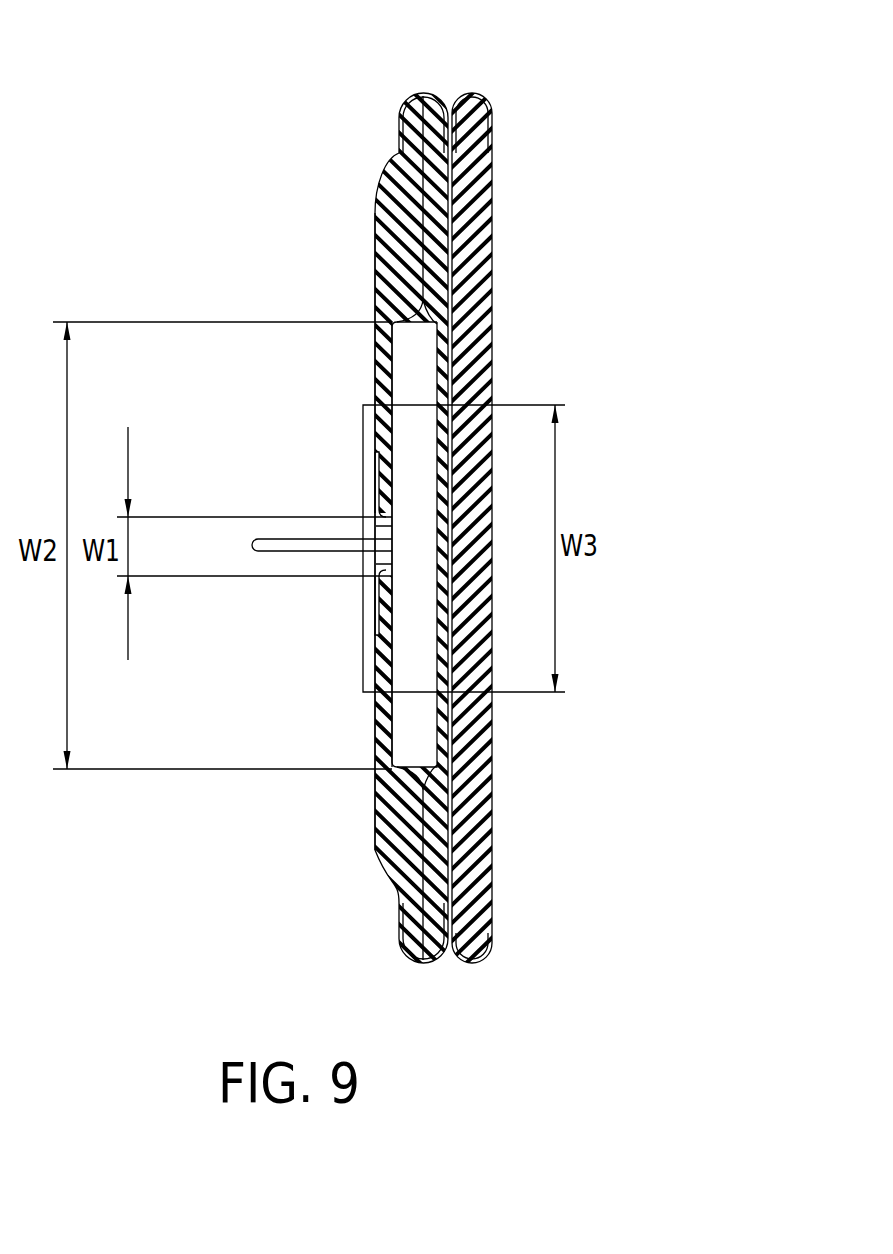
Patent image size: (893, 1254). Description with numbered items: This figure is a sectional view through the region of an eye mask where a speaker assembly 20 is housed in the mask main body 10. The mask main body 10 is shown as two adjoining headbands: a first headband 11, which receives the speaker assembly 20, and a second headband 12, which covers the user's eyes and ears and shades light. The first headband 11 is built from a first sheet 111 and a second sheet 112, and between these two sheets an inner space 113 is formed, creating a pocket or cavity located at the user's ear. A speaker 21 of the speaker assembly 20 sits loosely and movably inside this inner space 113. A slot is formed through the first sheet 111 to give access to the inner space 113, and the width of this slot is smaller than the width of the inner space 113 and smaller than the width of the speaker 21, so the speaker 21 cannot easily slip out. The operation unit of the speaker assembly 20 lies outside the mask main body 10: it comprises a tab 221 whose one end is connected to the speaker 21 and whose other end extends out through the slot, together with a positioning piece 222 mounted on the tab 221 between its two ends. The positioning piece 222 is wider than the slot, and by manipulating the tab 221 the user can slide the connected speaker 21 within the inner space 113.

The mask main body 10 is at (363, 76).
The first headband 11 is at (392, 168).
The second headband 12 is at (482, 163).
The first sheet 111 is at (437, 105).
The second sheet 112 is at (385, 243).
The inner space 113 is at (440, 333).
The speaker assembly 20 is at (312, 685).
The speaker 21 is at (422, 727).
The tab 221 is at (257, 547).
The positioning piece 222 is at (370, 615).